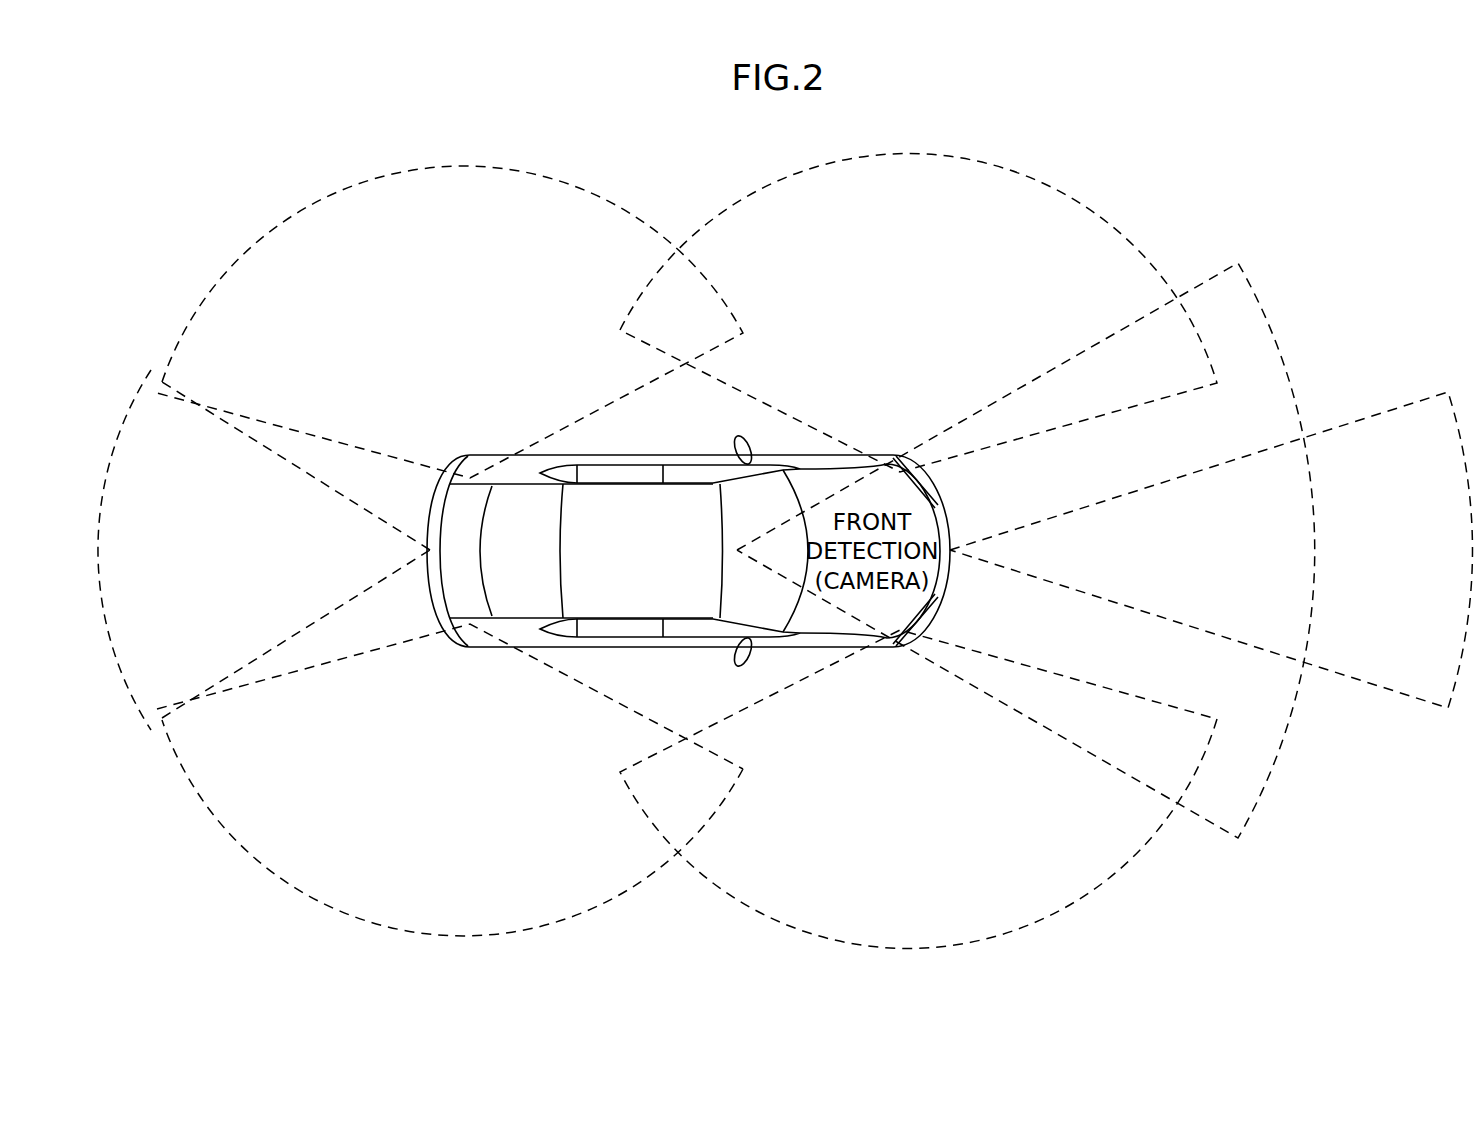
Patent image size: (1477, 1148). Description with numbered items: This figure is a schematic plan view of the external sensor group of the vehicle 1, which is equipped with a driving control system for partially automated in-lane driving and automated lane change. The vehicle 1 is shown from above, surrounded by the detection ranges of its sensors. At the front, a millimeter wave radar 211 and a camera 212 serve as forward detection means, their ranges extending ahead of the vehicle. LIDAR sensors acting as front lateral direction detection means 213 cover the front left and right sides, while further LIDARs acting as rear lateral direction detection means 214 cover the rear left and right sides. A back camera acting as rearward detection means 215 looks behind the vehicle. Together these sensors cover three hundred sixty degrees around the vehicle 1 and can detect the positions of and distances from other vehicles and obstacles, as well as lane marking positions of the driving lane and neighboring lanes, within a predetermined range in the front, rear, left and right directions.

The vehicle 1 is at (624, 524).
The millimeter wave radar 211 is at (1399, 407).
The camera 212 is at (1270, 322).
The front lateral direction detection means 213 is at (1083, 208).
The rear lateral direction detection means 214 is at (264, 236).
The rearward detection means 215 is at (136, 402).